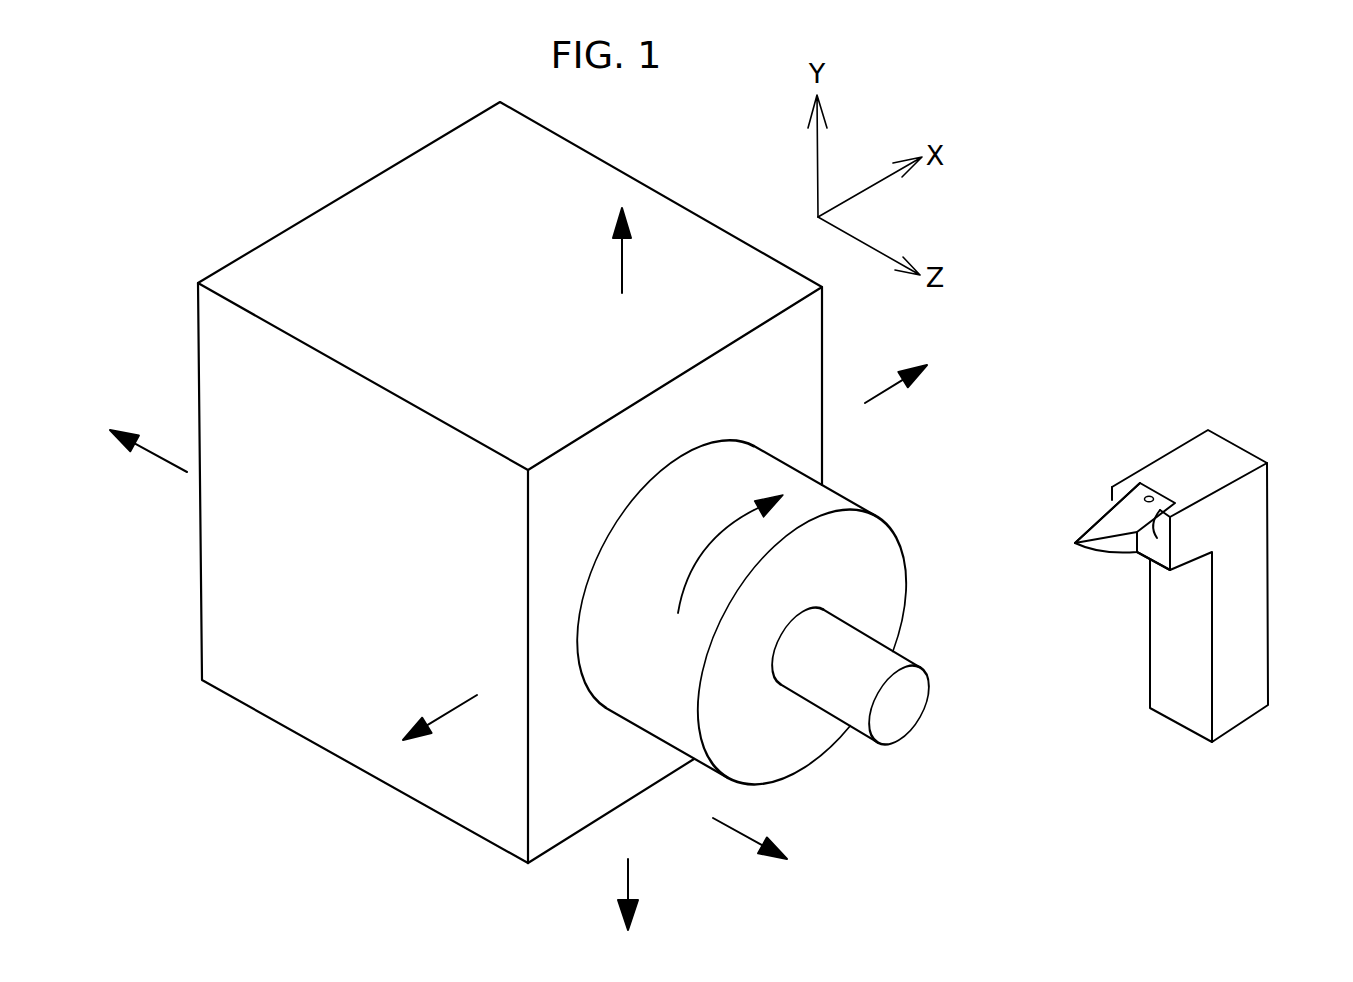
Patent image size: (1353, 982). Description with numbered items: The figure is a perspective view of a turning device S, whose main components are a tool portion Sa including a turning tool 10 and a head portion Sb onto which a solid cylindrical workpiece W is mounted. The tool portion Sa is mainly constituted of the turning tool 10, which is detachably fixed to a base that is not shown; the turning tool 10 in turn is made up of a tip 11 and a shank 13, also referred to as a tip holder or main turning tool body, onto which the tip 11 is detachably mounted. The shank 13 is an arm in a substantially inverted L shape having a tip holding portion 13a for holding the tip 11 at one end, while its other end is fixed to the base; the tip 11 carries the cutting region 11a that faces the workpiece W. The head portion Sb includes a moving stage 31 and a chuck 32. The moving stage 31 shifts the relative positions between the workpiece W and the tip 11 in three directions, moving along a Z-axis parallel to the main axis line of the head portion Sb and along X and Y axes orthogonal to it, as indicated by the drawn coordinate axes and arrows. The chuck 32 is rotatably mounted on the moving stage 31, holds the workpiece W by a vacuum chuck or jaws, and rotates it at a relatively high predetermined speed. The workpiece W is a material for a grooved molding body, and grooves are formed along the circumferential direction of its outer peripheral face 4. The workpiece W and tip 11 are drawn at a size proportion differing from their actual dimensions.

The turning device S is at (1030, 242).
The tool portion Sa is at (1212, 380).
The head portion Sb is at (497, 262).
The moving stage 31 is at (427, 540).
The chuck 32 is at (820, 507).
The workpiece W is at (832, 700).
The outer peripheral face 4 is at (890, 660).
The turning tool 10 is at (1018, 628).
The tip 11 is at (1090, 578).
The cutting edge 11a is at (1103, 513).
The shank 13 is at (1167, 675).
The tip holding portion 13a is at (1168, 544).